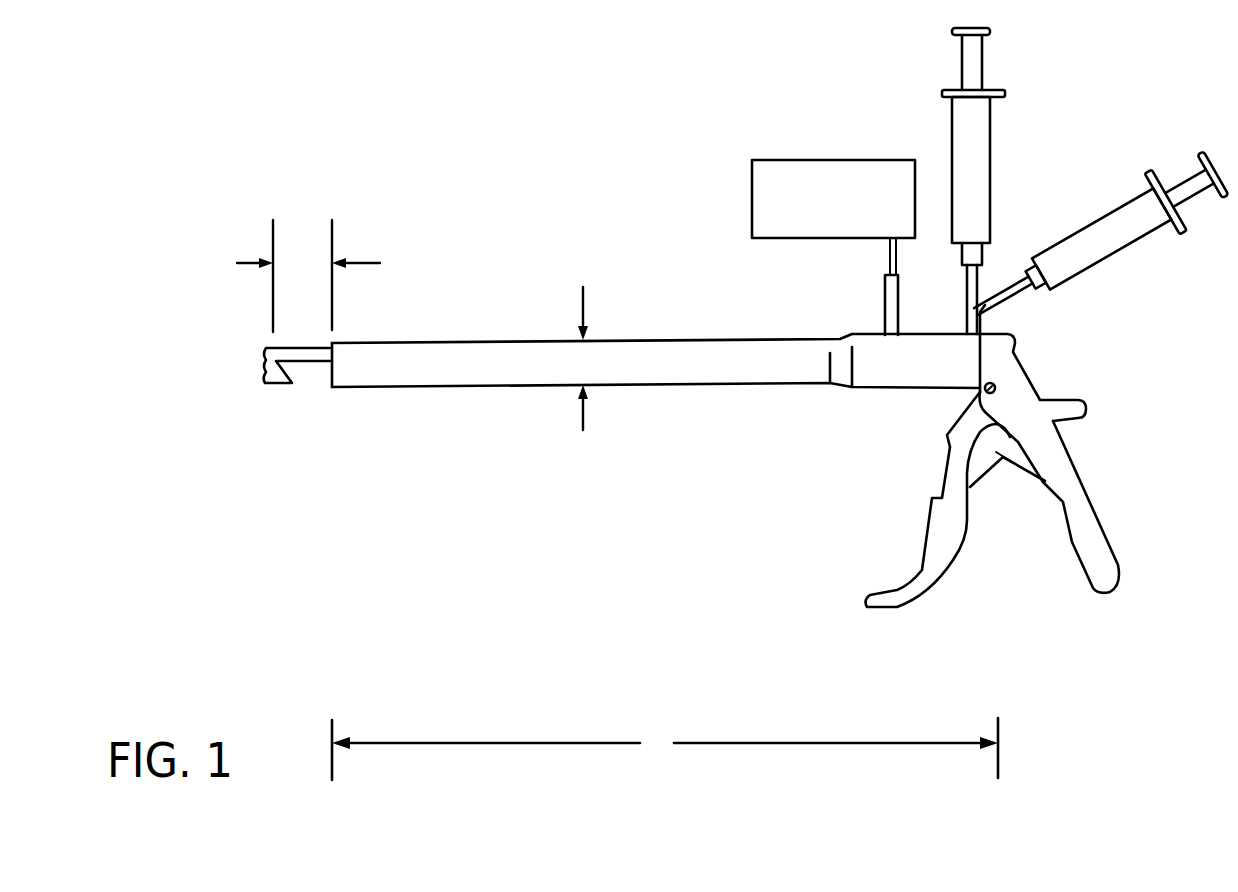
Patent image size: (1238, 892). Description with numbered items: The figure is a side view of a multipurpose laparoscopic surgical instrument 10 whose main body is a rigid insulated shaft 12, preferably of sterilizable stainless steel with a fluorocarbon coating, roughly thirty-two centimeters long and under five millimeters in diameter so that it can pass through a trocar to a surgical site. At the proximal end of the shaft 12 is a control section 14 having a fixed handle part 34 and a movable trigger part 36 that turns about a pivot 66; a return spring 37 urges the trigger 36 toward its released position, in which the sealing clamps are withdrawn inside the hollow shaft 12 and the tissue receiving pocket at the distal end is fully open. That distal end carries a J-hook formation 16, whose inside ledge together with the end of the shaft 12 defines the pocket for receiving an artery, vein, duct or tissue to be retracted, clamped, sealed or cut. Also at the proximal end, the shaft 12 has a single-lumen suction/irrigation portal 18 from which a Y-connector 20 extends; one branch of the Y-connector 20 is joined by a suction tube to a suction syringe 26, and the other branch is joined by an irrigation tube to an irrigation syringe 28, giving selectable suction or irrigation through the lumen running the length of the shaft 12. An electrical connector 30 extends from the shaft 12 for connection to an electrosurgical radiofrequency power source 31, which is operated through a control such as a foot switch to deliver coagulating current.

The multipurpose laparoscopic surgical instrument 10 is at (589, 232).
The rigid insulated shaft 12 is at (436, 357).
The control section 14 is at (1030, 378).
The J-hook formation 16 is at (262, 352).
The suction/irrigation portal 18 is at (983, 328).
The Y-connector 20 is at (963, 273).
The suction syringe 26 is at (970, 126).
The irrigation syringe 28 is at (1107, 223).
The electrical connector 30 is at (885, 297).
The electrosurgical radiofrequency power source 31 is at (772, 158).
The fixed handle part 34 is at (1098, 555).
The movable trigger part 36 is at (925, 578).
The return spring 37 is at (984, 478).
The pivot 66 is at (978, 390).